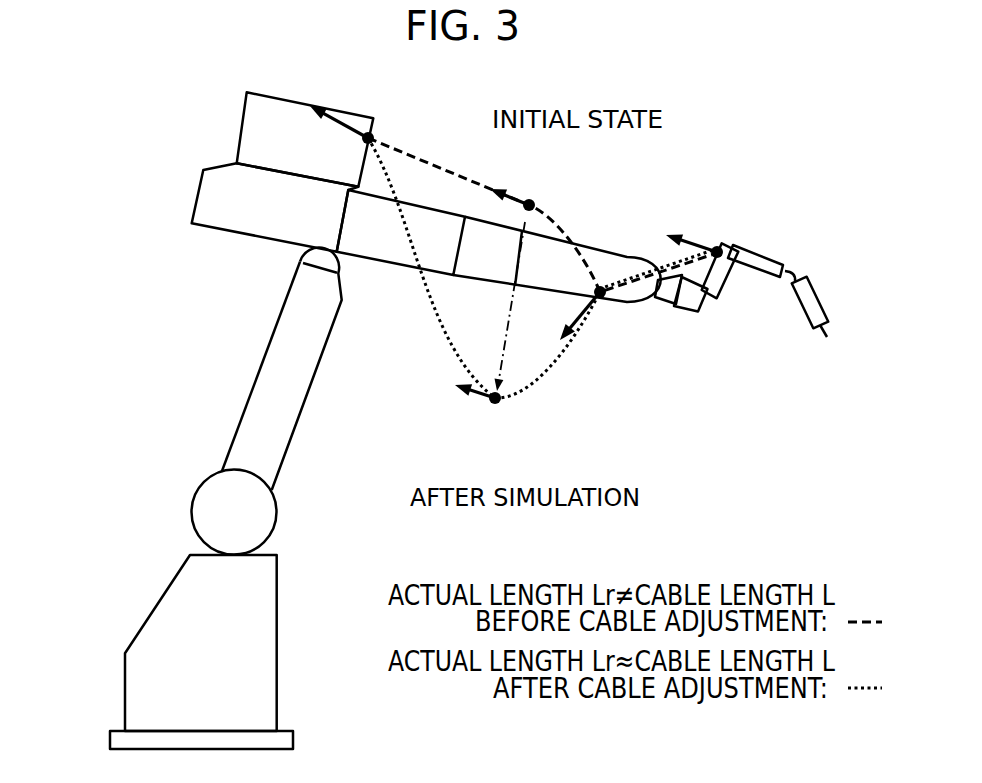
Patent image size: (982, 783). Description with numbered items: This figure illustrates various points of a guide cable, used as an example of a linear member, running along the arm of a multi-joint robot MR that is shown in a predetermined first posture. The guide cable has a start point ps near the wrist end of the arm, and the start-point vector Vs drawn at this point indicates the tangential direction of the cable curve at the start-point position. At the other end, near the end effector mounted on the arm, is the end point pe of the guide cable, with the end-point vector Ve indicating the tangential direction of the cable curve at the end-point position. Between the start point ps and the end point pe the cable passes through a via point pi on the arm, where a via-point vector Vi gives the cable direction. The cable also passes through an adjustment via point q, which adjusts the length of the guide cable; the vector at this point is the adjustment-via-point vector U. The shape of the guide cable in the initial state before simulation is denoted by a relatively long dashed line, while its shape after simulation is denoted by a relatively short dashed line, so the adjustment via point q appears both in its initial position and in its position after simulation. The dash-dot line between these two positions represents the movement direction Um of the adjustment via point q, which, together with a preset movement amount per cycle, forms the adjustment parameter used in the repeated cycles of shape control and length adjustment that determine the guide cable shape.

The multi-joint robot MR is at (155, 245).
The end point pe is at (370, 138).
The start point ps is at (717, 250).
The via point pi is at (602, 294).
The adjustment via point q is at (531, 203).
The adjustment-via-point vector U is at (479, 287).
The movement direction Um is at (492, 306).
The end-point vector Ve is at (333, 107).
The start-point vector Vs is at (680, 230).
The via-point vector Vi is at (580, 339).